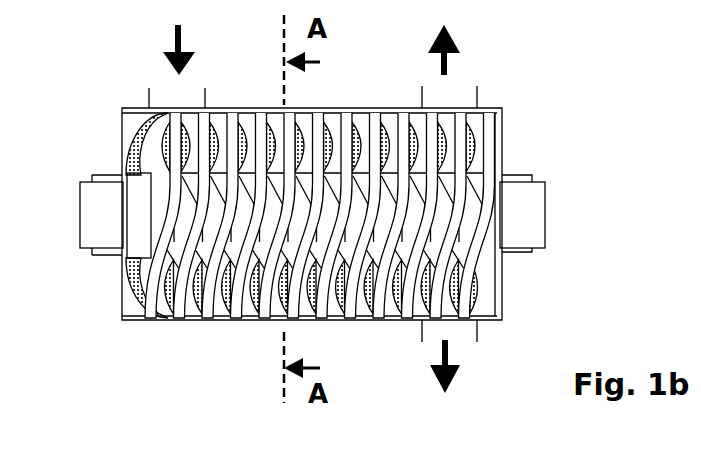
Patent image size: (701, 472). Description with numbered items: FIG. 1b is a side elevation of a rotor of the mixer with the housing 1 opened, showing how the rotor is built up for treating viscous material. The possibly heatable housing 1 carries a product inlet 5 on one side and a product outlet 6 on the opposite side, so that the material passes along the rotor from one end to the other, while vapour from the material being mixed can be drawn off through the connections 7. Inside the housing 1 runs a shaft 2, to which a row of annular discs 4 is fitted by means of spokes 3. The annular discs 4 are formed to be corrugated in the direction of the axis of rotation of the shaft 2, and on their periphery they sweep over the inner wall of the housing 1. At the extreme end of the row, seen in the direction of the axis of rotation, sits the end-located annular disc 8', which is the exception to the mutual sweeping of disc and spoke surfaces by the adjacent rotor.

The housing 1 is at (503, 107).
The shaft 2 is at (528, 203).
The spokes 3 is at (503, 253).
The annular discs 4 is at (478, 143).
The product inlet 5 is at (190, 95).
The product outlet 6 is at (467, 330).
The connections 7 is at (463, 90).
The end-located annular disc 8' is at (354, 199).